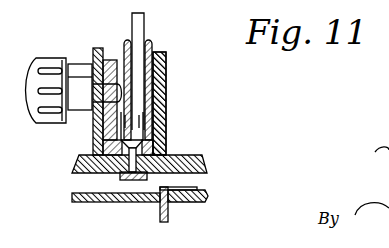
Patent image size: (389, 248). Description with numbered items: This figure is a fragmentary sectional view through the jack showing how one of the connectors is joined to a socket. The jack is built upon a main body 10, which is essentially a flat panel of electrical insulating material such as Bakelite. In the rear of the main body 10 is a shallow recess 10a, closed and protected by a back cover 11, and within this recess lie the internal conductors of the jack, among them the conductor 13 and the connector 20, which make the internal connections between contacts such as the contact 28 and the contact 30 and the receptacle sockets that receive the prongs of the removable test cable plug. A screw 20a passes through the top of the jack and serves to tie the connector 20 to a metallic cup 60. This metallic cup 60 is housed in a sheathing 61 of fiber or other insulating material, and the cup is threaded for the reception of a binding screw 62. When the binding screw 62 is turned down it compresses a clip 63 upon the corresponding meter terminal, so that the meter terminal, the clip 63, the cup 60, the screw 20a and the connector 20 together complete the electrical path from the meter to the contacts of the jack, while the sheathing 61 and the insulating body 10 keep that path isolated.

The main body 10 is at (183, 157).
The shallow recess 10a is at (199, 176).
The back cover 11 is at (134, 202).
The conductor 13 is at (199, 192).
The connector 20 is at (127, 182).
The screw 20a is at (165, 133).
The contact 28 is at (145, 28).
The contact 30 is at (168, 214).
The metallic cup 60 is at (167, 70).
The sheathing 61 is at (167, 80).
The binding screw 62 is at (78, 77).
The clip 63 is at (154, 44).